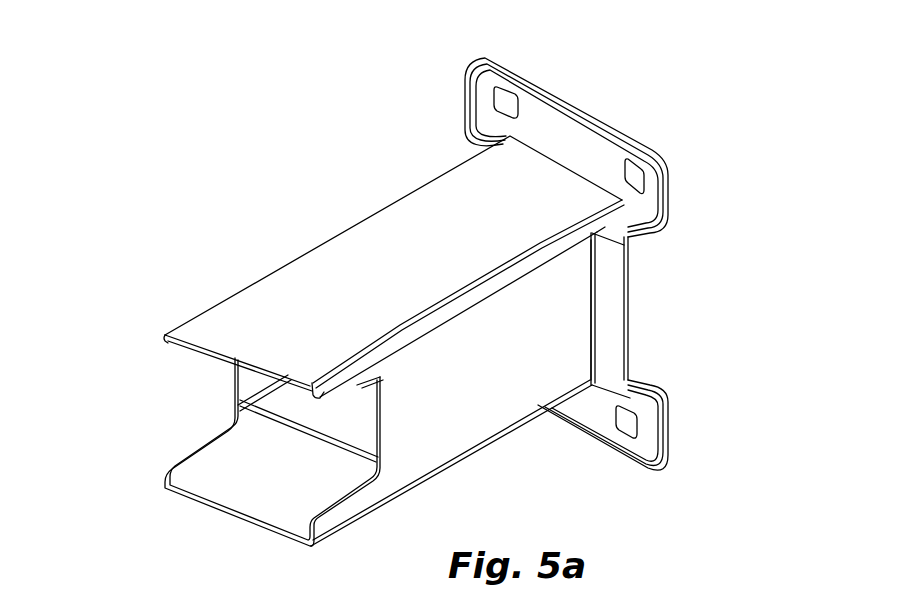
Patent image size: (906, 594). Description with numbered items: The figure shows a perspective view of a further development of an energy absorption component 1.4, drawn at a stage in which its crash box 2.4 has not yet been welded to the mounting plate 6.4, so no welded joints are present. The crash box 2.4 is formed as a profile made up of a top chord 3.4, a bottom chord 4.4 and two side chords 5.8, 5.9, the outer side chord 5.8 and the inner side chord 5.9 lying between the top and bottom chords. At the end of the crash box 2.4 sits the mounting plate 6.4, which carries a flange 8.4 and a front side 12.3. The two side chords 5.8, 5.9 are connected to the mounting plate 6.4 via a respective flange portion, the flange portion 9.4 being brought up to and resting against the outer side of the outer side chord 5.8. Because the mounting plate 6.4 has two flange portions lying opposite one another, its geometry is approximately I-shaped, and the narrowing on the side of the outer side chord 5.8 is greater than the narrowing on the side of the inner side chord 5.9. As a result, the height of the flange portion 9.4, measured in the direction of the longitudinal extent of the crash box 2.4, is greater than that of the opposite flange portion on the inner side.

The energy absorption component 1.4 is at (300, 206).
The crash box 2.4 is at (458, 214).
The top chord 3.4 is at (432, 265).
The bottom chord 4.4 is at (516, 440).
The side chord 5.8 is at (520, 377).
The side chord 5.9 is at (228, 378).
The mounting plate 6.4 is at (606, 158).
The flange 8.4 is at (543, 86).
The flange portion 9.4 is at (612, 311).
The front side 12.3 is at (583, 334).